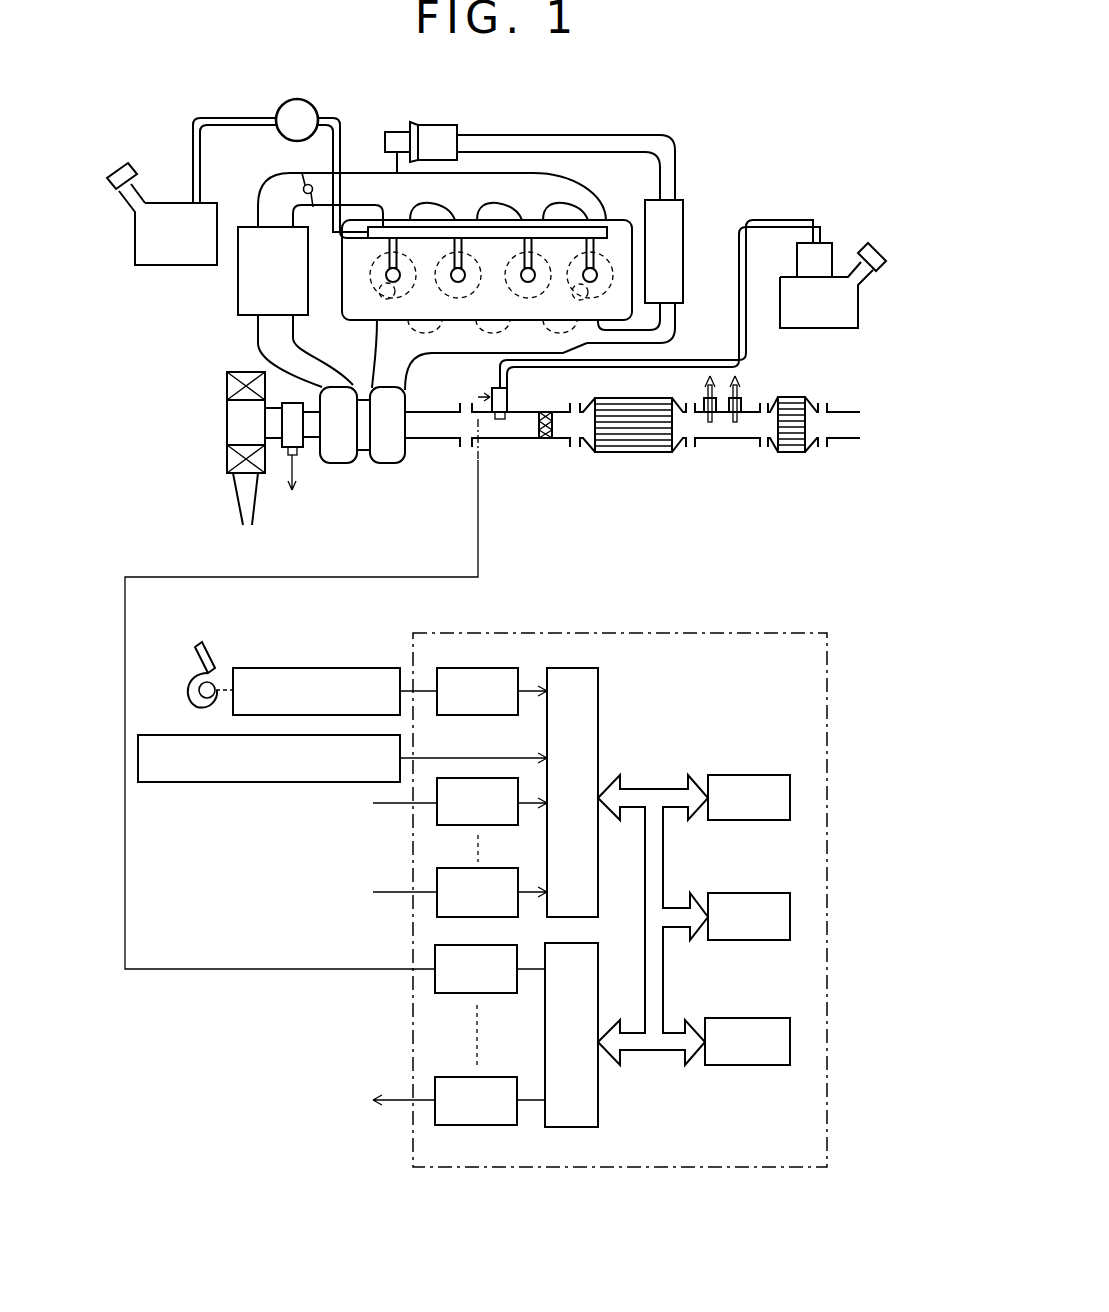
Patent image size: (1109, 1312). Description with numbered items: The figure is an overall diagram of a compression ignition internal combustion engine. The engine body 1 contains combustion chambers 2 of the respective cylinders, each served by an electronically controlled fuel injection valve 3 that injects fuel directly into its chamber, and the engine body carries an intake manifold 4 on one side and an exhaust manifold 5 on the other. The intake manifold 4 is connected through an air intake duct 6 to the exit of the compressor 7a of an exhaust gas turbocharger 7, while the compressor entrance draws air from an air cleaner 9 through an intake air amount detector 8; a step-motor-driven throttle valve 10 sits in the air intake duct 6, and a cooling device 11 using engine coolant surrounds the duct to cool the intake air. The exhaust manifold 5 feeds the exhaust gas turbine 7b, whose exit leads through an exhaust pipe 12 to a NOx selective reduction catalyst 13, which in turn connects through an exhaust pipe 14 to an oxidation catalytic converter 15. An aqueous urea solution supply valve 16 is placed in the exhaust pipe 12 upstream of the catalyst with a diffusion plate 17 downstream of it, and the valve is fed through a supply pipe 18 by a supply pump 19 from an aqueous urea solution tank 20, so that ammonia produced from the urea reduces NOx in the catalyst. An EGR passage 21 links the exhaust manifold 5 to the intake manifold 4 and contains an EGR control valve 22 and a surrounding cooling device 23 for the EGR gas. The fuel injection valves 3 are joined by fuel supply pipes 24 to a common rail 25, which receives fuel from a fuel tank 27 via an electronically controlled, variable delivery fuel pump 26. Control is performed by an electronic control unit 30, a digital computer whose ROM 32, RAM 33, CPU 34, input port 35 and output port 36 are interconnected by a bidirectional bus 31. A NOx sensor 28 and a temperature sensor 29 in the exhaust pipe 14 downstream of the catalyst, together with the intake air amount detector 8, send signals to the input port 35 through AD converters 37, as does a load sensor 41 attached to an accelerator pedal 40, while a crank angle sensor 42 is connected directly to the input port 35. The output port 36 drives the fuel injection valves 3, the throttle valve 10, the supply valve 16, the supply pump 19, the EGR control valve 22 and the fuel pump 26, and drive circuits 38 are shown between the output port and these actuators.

The engine body 1 is at (643, 209).
The combustion chamber 2 is at (380, 296).
The fuel injection valve 3 is at (386, 281).
The intake manifold 4 is at (575, 186).
The exhaust manifold 5 is at (455, 340).
The air intake duct 6 is at (263, 210).
The exhaust gas turbocharger 7 is at (339, 439).
The compressor 7a is at (338, 462).
The exhaust gas turbine 7b is at (392, 463).
The intake air amount detector 8 is at (300, 448).
The air cleaner 9 is at (237, 425).
The throttle valve 10 is at (302, 173).
The cooling device 11 is at (238, 295).
The exhaust pipe 12 is at (510, 440).
The NOx selective reduction catalyst 13 is at (632, 440).
The exhaust pipe 14 is at (725, 440).
The oxidation catalytic converter 15 is at (797, 442).
The aqueous urea solution supply valve 16 is at (507, 402).
The diffusion plate 17 is at (553, 428).
The supply pipe 18 is at (747, 341).
The supply pump 19 is at (827, 243).
The aqueous urea solution tank 20 is at (838, 318).
The EGR passage 21 is at (543, 136).
The EGR control valve 22 is at (396, 131).
The cooling device 23 is at (683, 246).
The fuel supply pipe 24 is at (388, 265).
The common rail 25 is at (500, 233).
The fuel pump 26 is at (288, 99).
The fuel tank 27 is at (153, 268).
The NOx sensor 28 is at (705, 393).
The temperature sensor 29 is at (743, 401).
The electronic control unit 30 is at (846, 670).
The bidirectional bus 31 is at (652, 787).
The read only memory (ROM) 32 is at (740, 775).
The random access memory (RAM) 33 is at (748, 893).
The microprocessor (CPU) 34 is at (740, 1018).
The input port 35 is at (573, 668).
The output port 36 is at (598, 1097).
The AD converter 37 is at (482, 668).
The drive circuit 38 is at (435, 1090).
The accelerator pedal 40 is at (213, 647).
The load sensor 41 is at (338, 668).
The crank angle sensor 42 is at (260, 782).